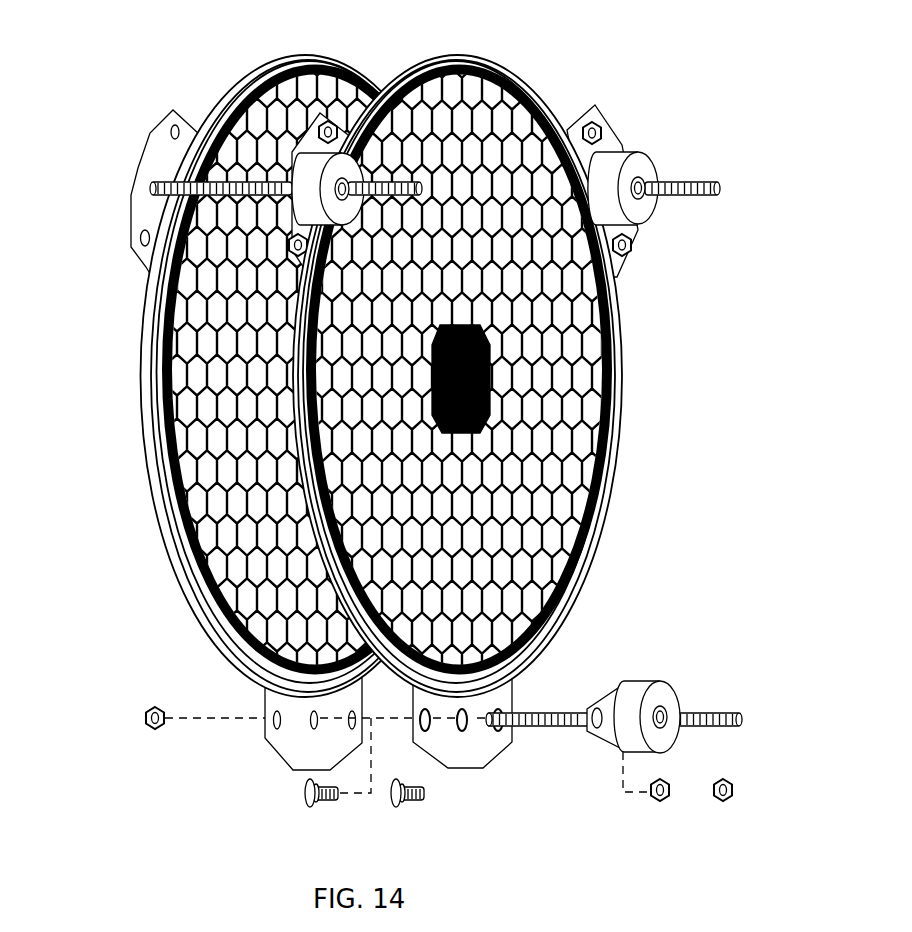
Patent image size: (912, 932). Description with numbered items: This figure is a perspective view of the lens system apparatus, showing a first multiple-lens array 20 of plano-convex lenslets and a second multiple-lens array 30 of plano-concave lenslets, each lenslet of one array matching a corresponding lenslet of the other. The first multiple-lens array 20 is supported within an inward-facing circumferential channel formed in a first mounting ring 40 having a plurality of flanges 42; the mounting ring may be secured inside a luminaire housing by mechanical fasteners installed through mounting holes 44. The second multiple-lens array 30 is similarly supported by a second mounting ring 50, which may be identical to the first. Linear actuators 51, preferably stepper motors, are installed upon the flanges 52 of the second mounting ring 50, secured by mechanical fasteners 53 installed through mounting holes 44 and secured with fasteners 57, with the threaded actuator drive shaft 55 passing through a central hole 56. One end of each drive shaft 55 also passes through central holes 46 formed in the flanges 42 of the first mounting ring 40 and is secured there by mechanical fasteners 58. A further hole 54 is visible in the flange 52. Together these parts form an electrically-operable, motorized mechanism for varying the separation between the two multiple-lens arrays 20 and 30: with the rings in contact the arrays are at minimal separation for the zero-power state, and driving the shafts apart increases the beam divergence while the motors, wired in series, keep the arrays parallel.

The first multiple-lens array 20 is at (244, 348).
The second multiple-lens array 30 is at (507, 348).
The first mounting ring 40 is at (138, 404).
The second mounting ring 50 is at (622, 413).
The flanges 42 is at (239, 748).
The mounting holes 44 is at (275, 728).
The central holes 46 is at (312, 729).
The linear actuators 51 is at (647, 680).
The flanges 52 is at (496, 758).
The mechanical fasteners 53 is at (306, 806).
The bracket hole 54 is at (438, 736).
The actuator drive shaft 55 is at (704, 706).
The central hole 56 is at (478, 738).
The fasteners 57 is at (668, 800).
The mechanical fasteners 58 is at (148, 712).